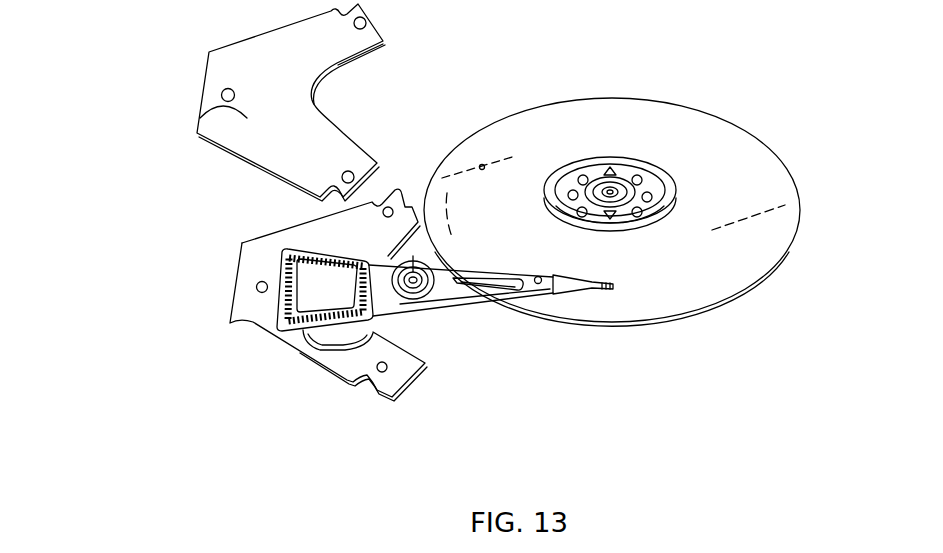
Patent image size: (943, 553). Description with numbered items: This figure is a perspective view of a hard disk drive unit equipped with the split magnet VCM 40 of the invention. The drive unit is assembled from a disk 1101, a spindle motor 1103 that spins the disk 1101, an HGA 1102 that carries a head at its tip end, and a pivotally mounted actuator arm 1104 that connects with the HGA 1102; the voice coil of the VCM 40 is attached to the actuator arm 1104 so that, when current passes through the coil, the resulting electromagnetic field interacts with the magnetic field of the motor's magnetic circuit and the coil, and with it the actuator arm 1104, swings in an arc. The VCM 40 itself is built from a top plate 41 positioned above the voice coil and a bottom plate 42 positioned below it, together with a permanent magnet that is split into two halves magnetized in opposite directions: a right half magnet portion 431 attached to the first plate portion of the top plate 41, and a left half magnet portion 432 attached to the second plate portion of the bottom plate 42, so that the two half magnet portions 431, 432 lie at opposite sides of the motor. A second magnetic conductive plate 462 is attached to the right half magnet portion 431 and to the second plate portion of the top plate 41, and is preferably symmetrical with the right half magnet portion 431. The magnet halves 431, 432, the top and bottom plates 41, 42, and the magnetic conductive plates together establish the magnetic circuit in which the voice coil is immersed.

The split magnet VCM 40 is at (107, 64).
The top plate 41 is at (197, 133).
The bottom plate 42 is at (250, 302).
The right half magnet portion 431 is at (337, 62).
The left half magnet portion 432 is at (325, 333).
The second magnetic conductive plate 462 is at (337, 247).
The disk 1101 is at (748, 142).
The HGA 1102 is at (572, 288).
The spindle motor 1103 is at (597, 172).
The actuator arm 1104 is at (483, 293).